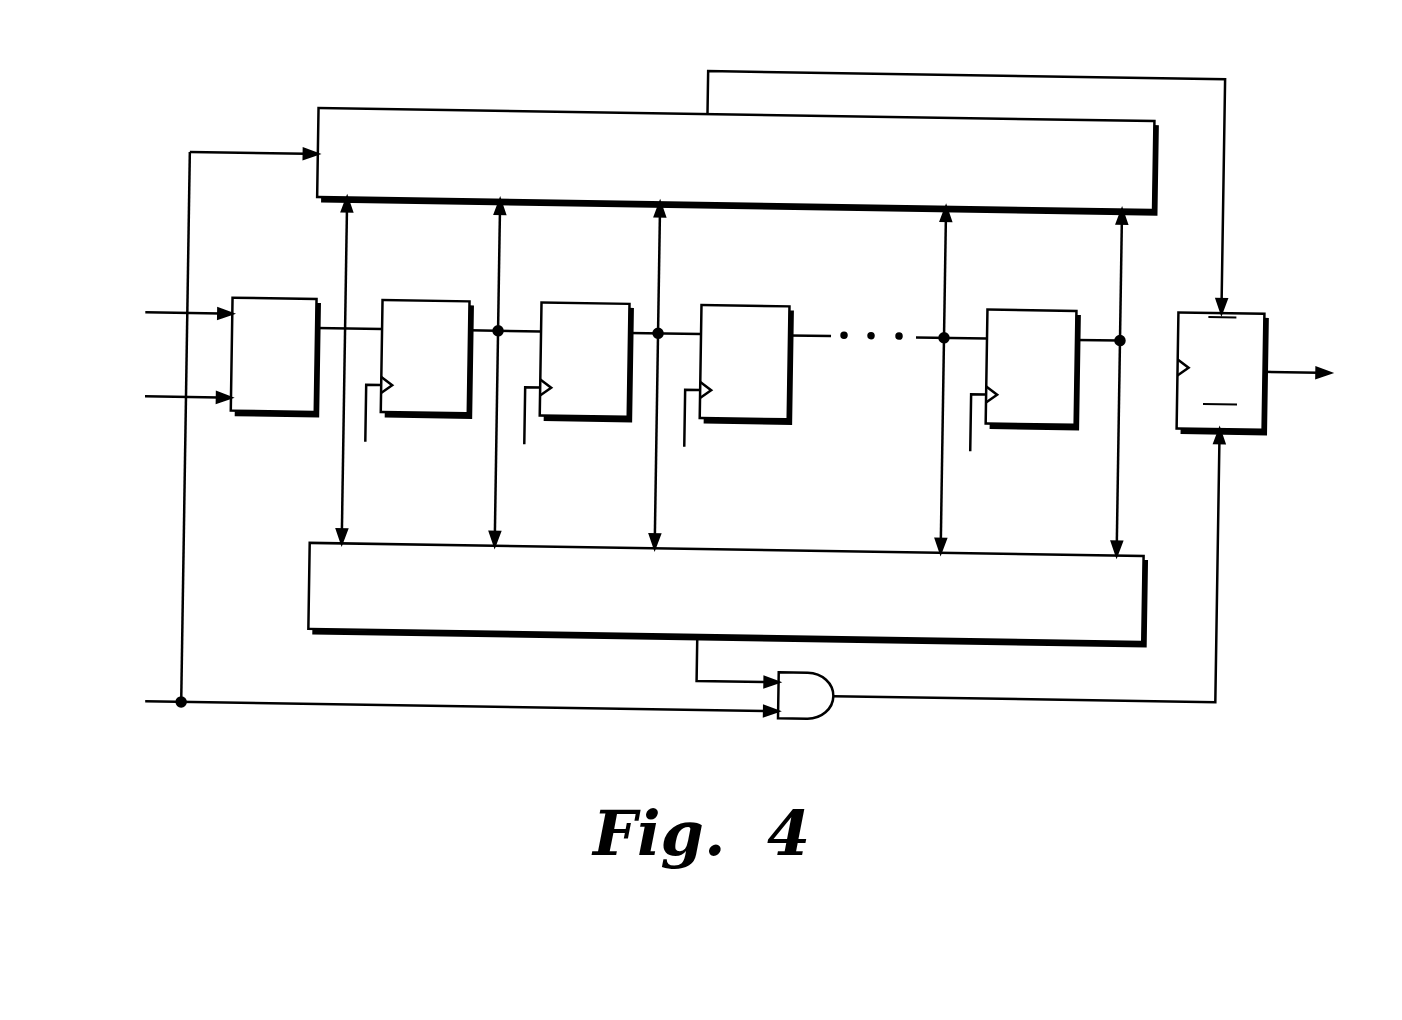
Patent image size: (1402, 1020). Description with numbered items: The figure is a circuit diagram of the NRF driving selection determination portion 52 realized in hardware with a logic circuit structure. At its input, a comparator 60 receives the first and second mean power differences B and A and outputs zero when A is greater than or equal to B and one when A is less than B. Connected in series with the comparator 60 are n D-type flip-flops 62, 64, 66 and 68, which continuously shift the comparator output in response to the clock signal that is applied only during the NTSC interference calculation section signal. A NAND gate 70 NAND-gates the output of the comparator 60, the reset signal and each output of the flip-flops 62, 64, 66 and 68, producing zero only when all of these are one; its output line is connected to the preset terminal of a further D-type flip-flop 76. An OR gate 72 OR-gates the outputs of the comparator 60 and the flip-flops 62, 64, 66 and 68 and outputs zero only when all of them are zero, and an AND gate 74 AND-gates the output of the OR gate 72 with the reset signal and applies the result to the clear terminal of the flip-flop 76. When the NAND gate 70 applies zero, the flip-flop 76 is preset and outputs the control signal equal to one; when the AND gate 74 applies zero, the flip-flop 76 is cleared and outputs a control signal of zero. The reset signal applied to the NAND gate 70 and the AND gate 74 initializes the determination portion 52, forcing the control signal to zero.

The NRF driving selection determination portion 52 is at (731, 400).
The comparator 60 is at (272, 305).
The D-type flip-flop 62 is at (423, 305).
The D-type flip-flop 64 is at (583, 305).
The D-type flip-flop 66 is at (743, 305).
The D-type flip-flop 68 is at (1031, 305).
The NAND gate 70 is at (412, 114).
The OR gate 72 is at (312, 595).
The AND gate 74 is at (795, 718).
The D-type flip-flop 76 is at (1248, 305).